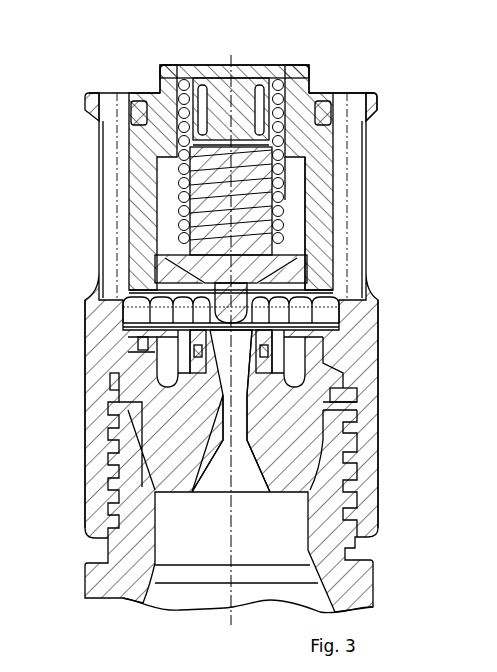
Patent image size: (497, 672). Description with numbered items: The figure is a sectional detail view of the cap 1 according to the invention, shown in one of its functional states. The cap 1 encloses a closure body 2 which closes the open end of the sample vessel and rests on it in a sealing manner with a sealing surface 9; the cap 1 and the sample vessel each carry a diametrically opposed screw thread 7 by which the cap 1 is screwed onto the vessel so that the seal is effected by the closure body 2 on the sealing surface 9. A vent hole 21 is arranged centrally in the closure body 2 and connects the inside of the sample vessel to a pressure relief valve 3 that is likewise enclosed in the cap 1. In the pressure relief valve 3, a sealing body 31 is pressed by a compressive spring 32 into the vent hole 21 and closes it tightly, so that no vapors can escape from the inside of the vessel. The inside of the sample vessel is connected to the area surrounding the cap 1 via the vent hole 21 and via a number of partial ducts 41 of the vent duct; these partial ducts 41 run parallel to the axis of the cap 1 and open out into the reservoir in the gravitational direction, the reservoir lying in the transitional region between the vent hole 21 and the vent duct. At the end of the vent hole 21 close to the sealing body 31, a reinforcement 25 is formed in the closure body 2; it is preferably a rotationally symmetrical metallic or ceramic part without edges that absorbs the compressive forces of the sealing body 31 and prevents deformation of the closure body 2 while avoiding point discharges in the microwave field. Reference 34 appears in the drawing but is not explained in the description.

The cap 1 is at (383, 240).
The closure body 2 is at (282, 408).
The pressure relief valve 3 is at (152, 192).
The screw thread 7 is at (362, 482).
The sealing surface 9 is at (147, 468).
The vent hole 21 is at (253, 428).
The reinforcement 25 is at (165, 342).
The sealing body 31 is at (245, 330).
The compressive spring 32 is at (213, 160).
The guide sleeve 34 is at (302, 227).
The partial ducts 41 is at (350, 117).